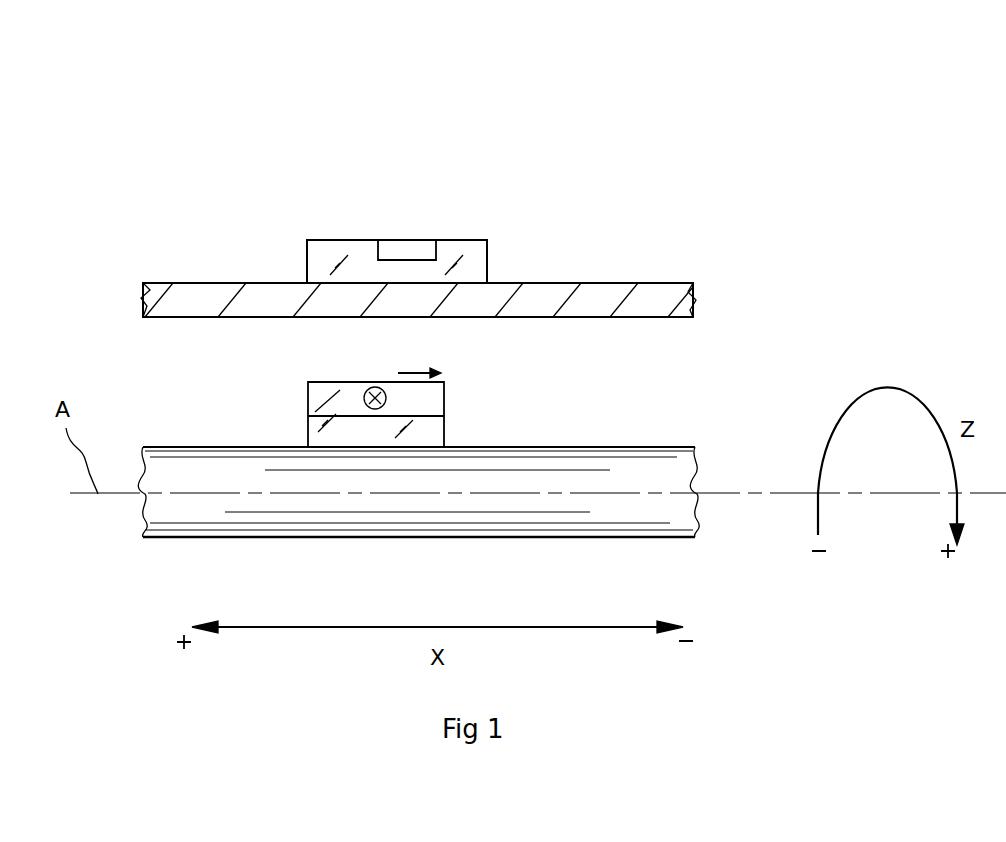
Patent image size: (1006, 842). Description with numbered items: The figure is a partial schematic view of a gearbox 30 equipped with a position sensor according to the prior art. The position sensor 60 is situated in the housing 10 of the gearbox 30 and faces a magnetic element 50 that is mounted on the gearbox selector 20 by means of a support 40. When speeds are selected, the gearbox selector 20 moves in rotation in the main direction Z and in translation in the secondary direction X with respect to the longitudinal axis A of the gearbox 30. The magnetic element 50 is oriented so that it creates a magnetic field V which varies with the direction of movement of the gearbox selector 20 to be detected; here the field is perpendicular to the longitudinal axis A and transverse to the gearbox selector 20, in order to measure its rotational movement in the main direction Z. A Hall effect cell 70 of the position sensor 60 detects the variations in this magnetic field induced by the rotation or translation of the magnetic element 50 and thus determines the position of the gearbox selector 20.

The housing 10 is at (655, 292).
The gearbox selector 20 is at (640, 466).
The gearbox 30 is at (200, 158).
The support 40 is at (435, 428).
The magnetic element 50 is at (443, 393).
The position sensor 60 is at (475, 250).
The Hall effect cell 70 is at (395, 248).